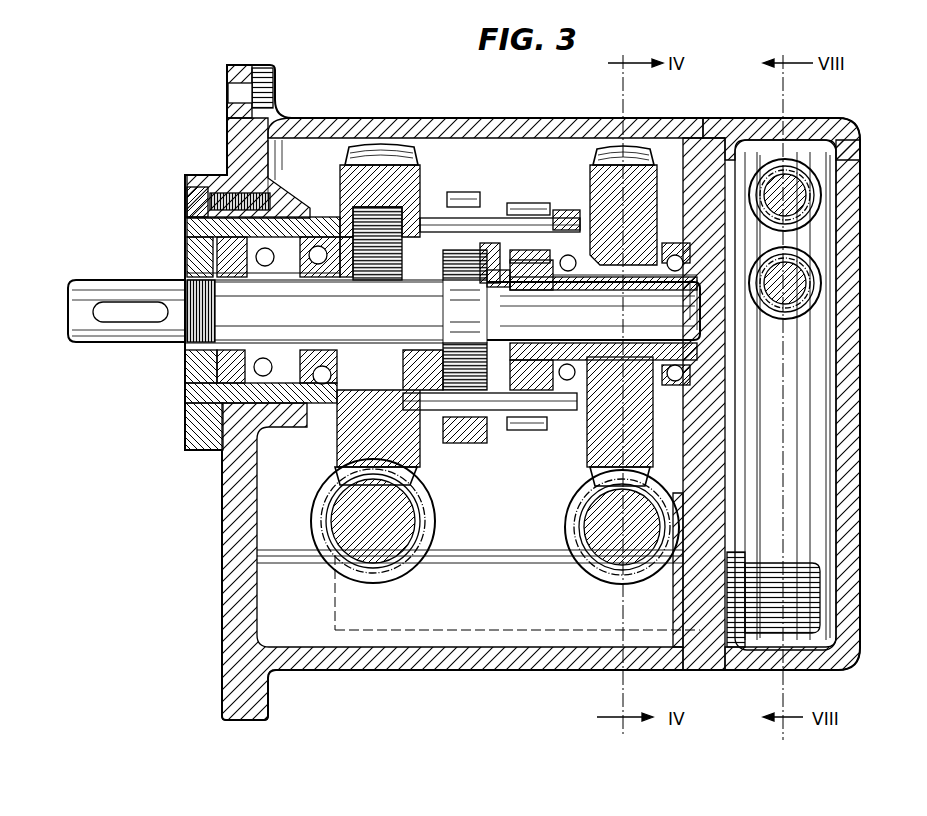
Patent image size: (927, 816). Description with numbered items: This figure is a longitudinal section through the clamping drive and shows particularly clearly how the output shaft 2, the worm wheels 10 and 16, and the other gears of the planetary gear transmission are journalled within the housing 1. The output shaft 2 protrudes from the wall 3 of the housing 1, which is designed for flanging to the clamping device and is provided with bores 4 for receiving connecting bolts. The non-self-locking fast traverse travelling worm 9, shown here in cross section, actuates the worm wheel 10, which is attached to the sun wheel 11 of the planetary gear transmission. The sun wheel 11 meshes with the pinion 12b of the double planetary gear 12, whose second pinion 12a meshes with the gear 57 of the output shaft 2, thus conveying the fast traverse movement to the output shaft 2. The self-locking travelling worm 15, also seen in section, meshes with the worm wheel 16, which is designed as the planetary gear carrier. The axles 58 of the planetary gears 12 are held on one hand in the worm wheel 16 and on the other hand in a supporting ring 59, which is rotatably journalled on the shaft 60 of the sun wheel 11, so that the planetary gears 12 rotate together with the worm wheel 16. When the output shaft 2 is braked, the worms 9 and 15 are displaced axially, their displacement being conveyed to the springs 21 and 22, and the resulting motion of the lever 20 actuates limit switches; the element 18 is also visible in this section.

The housing 1 is at (520, 128).
The output shaft 2 is at (132, 330).
The wall 3 is at (212, 503).
The bores 4 is at (232, 93).
The travelling worm 9 is at (588, 518).
The worm wheel 10 is at (615, 165).
The sun wheel 11 is at (530, 348).
The double planetary gear 12 is at (512, 428).
The second pinion 12a is at (465, 195).
The pinion 12b is at (526, 205).
The travelling worm 15 is at (412, 524).
The worm wheel 16 is at (375, 165).
The plug 18 is at (778, 638).
The lever 20 is at (800, 462).
The spring 21 is at (815, 275).
The spring 22 is at (815, 190).
The gear 57 is at (440, 307).
The axles 58 is at (425, 226).
The supporting ring 59 is at (562, 212).
The shaft 60 is at (600, 355).